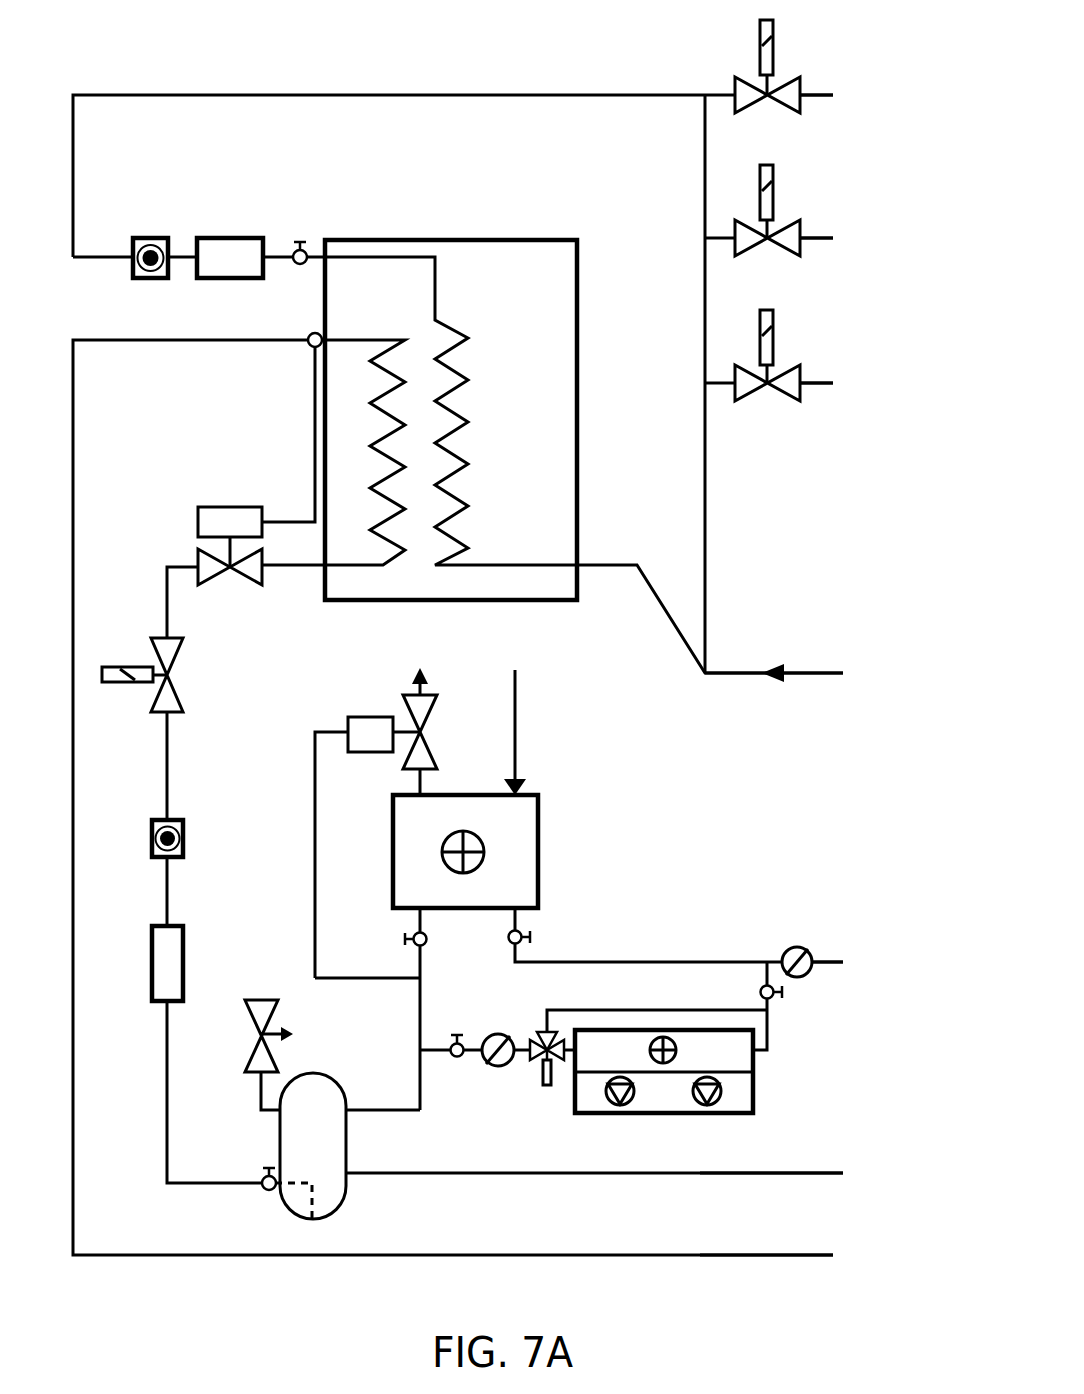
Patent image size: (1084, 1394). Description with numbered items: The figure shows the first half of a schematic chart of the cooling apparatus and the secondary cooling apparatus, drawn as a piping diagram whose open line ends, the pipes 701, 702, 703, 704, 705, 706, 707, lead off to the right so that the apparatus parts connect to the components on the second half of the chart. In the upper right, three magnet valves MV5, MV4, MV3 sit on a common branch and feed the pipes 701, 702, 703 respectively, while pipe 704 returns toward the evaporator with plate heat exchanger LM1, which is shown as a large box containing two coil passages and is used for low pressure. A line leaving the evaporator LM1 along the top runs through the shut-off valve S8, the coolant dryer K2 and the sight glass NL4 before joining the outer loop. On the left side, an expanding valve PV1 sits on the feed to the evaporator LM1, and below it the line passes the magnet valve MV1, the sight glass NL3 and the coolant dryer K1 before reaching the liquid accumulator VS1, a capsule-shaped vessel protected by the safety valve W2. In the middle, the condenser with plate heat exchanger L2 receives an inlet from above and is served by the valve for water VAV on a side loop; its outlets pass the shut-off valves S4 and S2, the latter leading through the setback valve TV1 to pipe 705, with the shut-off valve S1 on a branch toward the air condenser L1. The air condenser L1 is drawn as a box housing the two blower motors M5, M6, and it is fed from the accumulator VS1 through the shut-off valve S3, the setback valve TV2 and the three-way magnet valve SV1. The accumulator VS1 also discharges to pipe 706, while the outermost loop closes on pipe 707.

The magnet valve MV5 is at (798, 64).
The magnet valve MV4 is at (798, 210).
The magnet valve MV3 is at (798, 355).
The magnet valve MV1 is at (179, 675).
The pipe 701 is at (833, 95).
The pipe 702 is at (833, 238).
The pipe 703 is at (833, 383).
The pipe 704 is at (833, 673).
The pipe 705 is at (833, 962).
The pipe 706 is at (833, 1173).
The pipe 707 is at (833, 1255).
The sight glass NL4 is at (139, 238).
The sight glass NL3 is at (201, 839).
The coolant dryer K2 is at (230, 238).
The coolant dryer K1 is at (191, 963).
The shut-off valve S8 is at (296, 231).
The shut-off valve S4 is at (392, 939).
The shut-off valve S3 is at (447, 1025).
The shut-off valve S2 is at (545, 938).
The shut-off valve S1 is at (751, 991).
The evaporator with plate heat exchanger LM1 is at (442, 399).
The expanding valve PV1 is at (230, 524).
The safety valve W2 is at (236, 1036).
The liquid accumulator VS1 is at (337, 1146).
The valve for water VAV is at (382, 724).
The condenser with plate heat exchanger L2 is at (465, 851).
The air condenser L1 is at (685, 1071).
The setback valve TV2 is at (508, 1030).
The setback valve TV1 is at (794, 941).
The 3-way magnet valve SV1 is at (532, 1078).
The blower motor M5 is at (620, 1115).
The blower motor M6 is at (715, 1115).